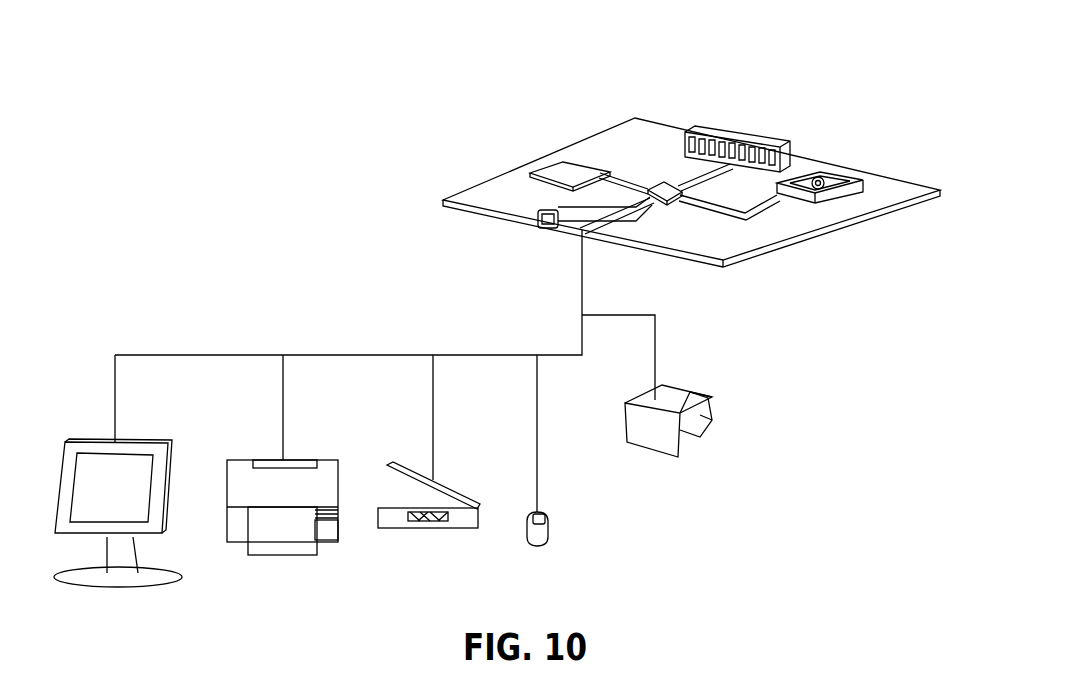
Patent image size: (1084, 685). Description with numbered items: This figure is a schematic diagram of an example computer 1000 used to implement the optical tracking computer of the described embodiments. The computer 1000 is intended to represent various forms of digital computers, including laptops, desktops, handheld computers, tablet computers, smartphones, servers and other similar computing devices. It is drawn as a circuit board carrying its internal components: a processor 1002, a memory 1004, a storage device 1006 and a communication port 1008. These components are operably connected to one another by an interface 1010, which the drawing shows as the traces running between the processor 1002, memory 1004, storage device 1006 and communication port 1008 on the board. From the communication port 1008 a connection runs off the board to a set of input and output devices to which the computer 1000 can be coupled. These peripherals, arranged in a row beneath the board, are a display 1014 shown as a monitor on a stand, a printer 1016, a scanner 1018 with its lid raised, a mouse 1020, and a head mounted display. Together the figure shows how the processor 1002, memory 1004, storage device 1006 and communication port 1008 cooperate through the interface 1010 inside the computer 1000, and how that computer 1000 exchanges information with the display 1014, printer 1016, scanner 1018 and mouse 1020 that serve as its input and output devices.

The computer 1000 is at (808, 71).
The processor 1002 is at (555, 173).
The memory 1004 is at (727, 130).
The storage device 1006 is at (850, 212).
The communication port 1008 is at (672, 203).
The interface 1010 is at (815, 203).
The display 1014 is at (145, 587).
The printer 1016 is at (280, 560).
The scanner 1018 is at (460, 528).
The mouse 1020 is at (549, 528).